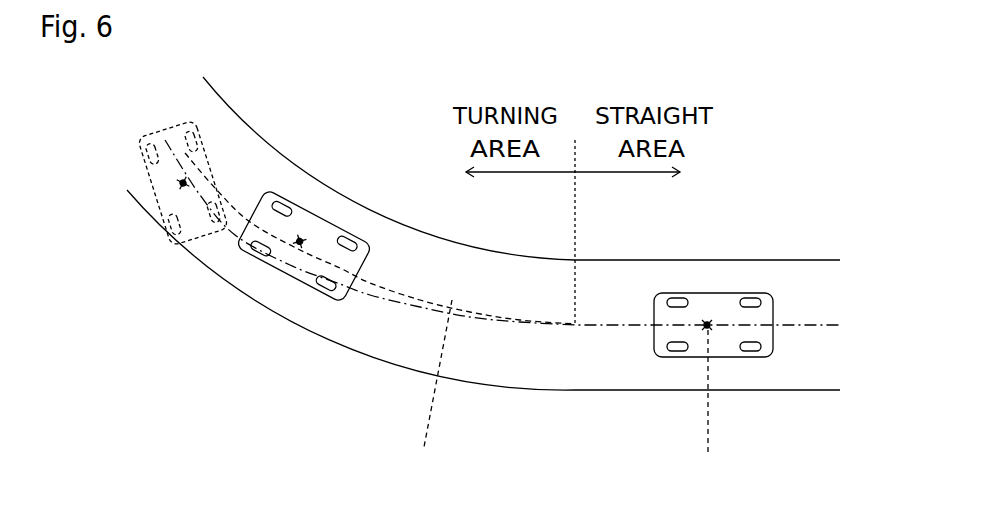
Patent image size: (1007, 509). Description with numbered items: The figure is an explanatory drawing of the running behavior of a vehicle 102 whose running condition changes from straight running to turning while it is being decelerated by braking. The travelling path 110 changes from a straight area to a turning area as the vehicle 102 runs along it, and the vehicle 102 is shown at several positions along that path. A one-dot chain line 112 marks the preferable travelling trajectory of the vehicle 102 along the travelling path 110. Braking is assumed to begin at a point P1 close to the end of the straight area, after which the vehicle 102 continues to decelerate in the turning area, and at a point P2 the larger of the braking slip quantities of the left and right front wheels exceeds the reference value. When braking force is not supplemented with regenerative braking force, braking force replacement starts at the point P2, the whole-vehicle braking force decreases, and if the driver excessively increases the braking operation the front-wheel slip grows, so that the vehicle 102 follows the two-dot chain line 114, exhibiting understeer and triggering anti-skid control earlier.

The vehicle 102 is at (205, 140).
The travelling path 110 is at (580, 390).
The one-dot chain line 112 is at (392, 292).
The two-dot chain line 114 is at (368, 297).
The point P1 is at (726, 392).
The point P2 is at (447, 374).